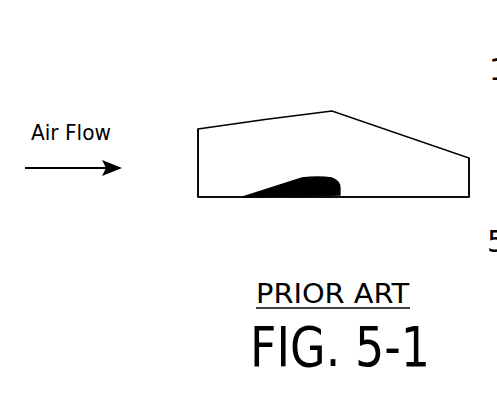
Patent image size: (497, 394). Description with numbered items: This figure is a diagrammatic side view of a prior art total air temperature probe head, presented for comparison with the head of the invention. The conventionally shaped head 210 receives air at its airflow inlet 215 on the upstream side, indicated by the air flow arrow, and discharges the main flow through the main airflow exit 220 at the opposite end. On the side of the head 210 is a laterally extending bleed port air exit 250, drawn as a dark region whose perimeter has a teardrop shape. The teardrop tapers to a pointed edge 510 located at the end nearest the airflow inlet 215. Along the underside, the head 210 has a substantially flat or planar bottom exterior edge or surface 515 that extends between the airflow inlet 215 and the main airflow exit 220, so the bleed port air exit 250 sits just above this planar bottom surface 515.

The conventionally shaped TAT probe head 210 is at (369, 99).
The airflow inlet 215 is at (197, 150).
The main airflow exit 220 is at (466, 168).
The bleed port air exit 250 is at (312, 177).
The pointed edge 510 is at (247, 197).
The bottom exterior edge or surface 515 is at (404, 197).